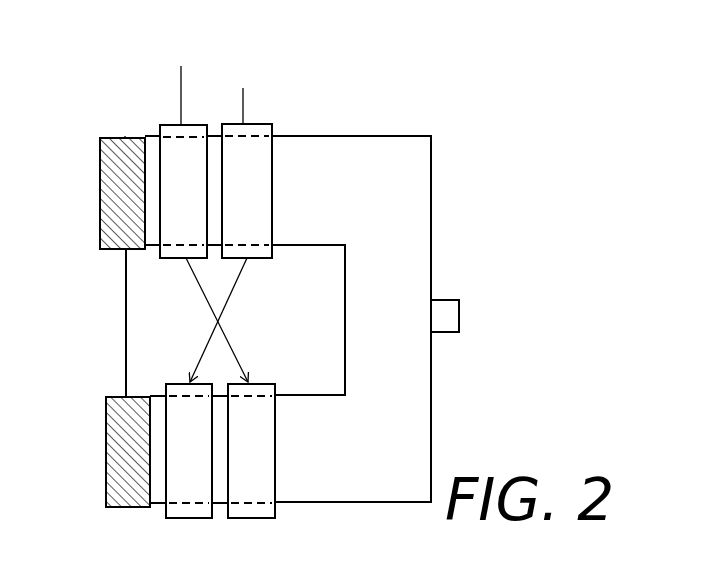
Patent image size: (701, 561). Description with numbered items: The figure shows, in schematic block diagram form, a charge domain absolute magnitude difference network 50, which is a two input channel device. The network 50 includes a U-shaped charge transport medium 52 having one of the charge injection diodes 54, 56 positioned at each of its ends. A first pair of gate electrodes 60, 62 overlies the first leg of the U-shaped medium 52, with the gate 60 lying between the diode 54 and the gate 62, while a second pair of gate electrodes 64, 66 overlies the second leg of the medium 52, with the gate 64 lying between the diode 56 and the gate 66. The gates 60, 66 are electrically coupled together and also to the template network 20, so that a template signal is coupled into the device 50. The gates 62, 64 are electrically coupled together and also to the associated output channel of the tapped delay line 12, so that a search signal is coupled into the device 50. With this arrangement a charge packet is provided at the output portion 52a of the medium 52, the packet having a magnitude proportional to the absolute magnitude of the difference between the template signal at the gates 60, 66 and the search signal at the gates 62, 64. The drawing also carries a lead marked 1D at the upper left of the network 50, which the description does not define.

The absolute magnitude difference network 50 is at (38, 330).
The U-shaped charge transport medium 52 is at (345, 134).
The output portion 52a is at (443, 300).
The charge injection diode 54 is at (100, 151).
The charge injection diode 56 is at (106, 405).
The inductor/conductor lead 1D is at (125, 138).
The gate electrode 60 is at (172, 124).
The gate electrode 62 is at (265, 124).
The gate electrode 64 is at (177, 384).
The gate electrode 66 is at (262, 384).
The template network 20 is at (191, 63).
The tapped delay line 12 is at (286, 86).